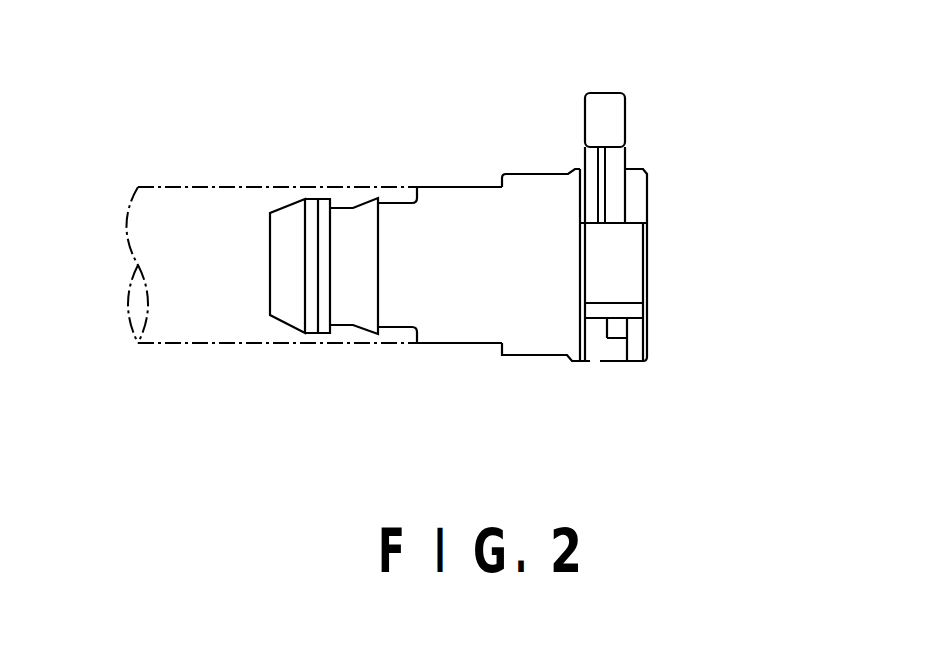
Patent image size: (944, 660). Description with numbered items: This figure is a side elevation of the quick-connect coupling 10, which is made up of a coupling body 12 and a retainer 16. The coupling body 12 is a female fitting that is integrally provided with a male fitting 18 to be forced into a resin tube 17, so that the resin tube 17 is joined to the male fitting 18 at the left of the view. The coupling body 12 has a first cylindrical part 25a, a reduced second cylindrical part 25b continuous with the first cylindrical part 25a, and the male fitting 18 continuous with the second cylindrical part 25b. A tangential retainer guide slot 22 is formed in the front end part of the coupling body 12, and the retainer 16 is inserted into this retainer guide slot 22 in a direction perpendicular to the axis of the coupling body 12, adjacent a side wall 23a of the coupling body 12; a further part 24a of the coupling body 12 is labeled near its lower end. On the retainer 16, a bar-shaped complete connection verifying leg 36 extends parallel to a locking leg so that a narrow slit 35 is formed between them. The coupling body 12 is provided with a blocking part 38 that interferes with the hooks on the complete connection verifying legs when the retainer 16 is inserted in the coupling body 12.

The quick-connect coupling 10 is at (404, 82).
The coupling body 12 is at (444, 364).
The retainer 16 is at (651, 85).
The resin tube 17 is at (168, 187).
The male fitting 18 is at (365, 223).
The retainer guide slot 22 is at (623, 193).
The side wall 23a is at (627, 265).
The engaging claw 24a is at (622, 357).
The first cylindrical part 25a is at (532, 188).
The second cylindrical part 25b is at (465, 200).
The narrow slit 35 is at (603, 200).
The complete connection verifying leg 36 is at (590, 207).
The blocking part 38 is at (592, 327).